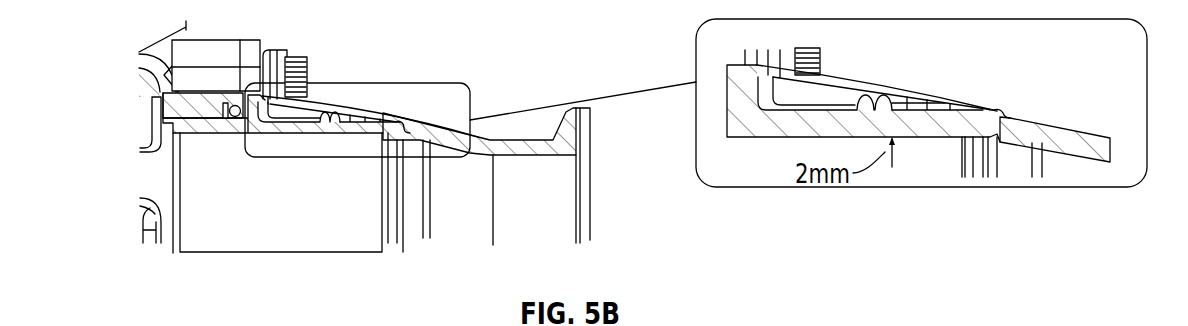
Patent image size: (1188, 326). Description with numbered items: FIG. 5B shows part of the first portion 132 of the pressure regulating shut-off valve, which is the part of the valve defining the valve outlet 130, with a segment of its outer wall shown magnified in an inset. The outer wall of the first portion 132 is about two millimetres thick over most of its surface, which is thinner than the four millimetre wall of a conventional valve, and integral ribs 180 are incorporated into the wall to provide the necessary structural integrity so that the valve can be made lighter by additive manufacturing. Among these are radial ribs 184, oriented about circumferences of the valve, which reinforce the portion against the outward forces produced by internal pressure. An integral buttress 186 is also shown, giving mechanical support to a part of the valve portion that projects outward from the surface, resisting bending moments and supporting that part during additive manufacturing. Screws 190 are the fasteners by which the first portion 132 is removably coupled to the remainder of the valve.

The valve outlet 130 is at (593, 210).
The first portion 132 is at (520, 143).
The integral ribs 180 is at (330, 110).
The radial ribs 184 is at (420, 122).
The integral buttress 186 is at (293, 108).
The screws 190 is at (280, 58).